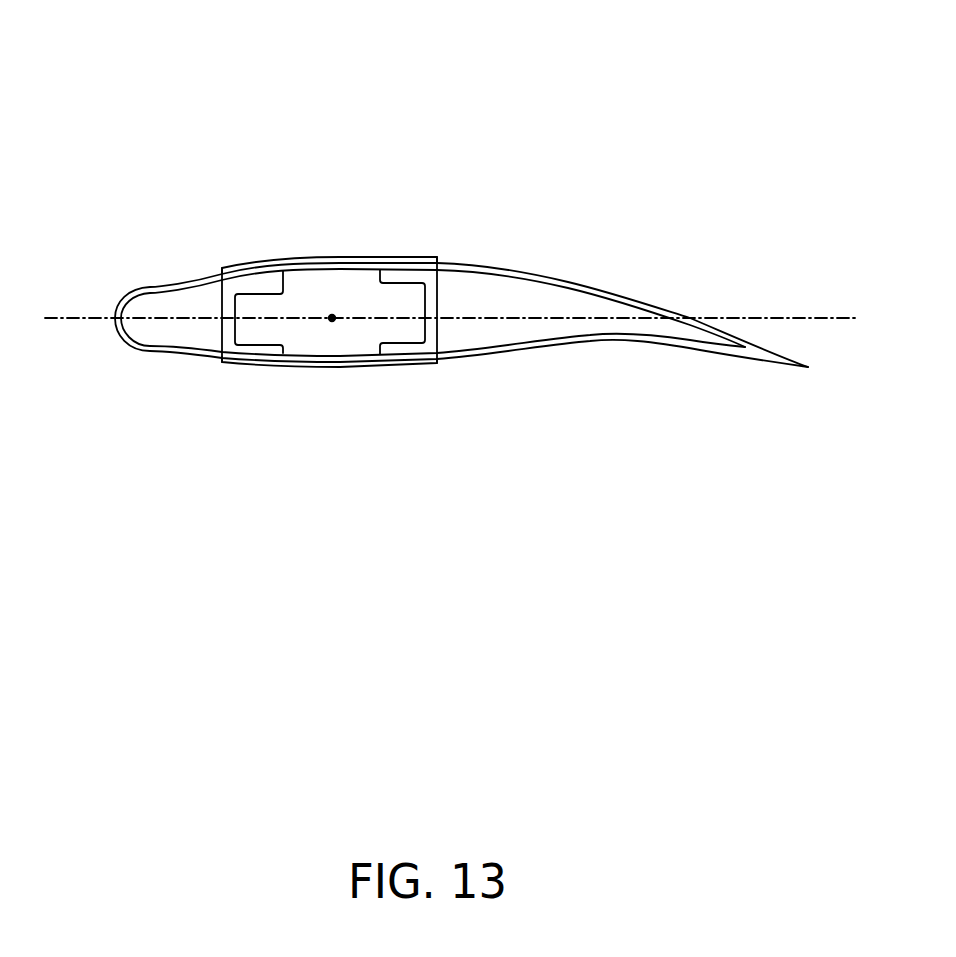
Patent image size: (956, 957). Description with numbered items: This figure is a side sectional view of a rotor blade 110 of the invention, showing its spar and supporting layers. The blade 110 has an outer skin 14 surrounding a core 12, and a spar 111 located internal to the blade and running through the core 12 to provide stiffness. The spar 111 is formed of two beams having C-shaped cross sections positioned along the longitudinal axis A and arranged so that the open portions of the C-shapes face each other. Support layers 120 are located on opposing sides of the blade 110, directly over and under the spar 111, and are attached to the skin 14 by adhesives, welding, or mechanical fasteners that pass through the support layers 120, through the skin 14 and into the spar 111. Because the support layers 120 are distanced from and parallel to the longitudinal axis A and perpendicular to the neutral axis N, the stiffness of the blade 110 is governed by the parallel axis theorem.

The blade 110 is at (516, 122).
The spar 111 is at (425, 306).
The support layers 120 is at (413, 257).
The skin 14 is at (568, 282).
The core 12 is at (525, 328).
The longitudinal axis A is at (332, 320).
The neutral axis N is at (753, 318).